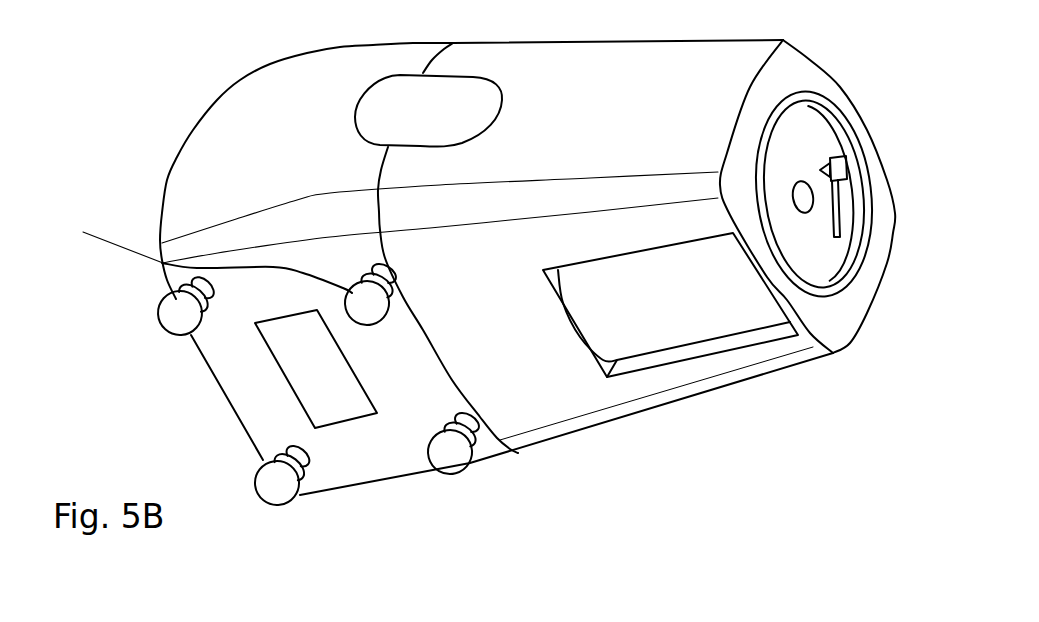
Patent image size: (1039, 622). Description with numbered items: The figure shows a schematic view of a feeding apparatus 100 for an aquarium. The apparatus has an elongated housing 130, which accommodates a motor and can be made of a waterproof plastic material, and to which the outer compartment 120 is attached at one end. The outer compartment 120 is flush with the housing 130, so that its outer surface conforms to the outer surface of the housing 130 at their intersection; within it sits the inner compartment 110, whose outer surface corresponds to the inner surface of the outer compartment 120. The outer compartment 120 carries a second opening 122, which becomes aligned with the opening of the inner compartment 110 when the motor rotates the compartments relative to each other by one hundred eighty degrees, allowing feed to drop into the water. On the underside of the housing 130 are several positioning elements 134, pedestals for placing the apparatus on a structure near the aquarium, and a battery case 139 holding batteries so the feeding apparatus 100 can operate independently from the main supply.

The feeding apparatus 100 is at (198, 28).
The inner compartment 110 is at (807, 133).
The outer compartment 120 is at (768, 365).
The second opening 122 is at (672, 338).
The housing 130 is at (255, 132).
The positioning elements 134 is at (172, 311).
The battery case 139 is at (300, 367).